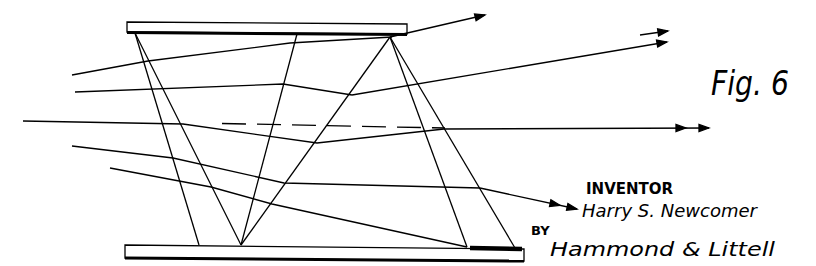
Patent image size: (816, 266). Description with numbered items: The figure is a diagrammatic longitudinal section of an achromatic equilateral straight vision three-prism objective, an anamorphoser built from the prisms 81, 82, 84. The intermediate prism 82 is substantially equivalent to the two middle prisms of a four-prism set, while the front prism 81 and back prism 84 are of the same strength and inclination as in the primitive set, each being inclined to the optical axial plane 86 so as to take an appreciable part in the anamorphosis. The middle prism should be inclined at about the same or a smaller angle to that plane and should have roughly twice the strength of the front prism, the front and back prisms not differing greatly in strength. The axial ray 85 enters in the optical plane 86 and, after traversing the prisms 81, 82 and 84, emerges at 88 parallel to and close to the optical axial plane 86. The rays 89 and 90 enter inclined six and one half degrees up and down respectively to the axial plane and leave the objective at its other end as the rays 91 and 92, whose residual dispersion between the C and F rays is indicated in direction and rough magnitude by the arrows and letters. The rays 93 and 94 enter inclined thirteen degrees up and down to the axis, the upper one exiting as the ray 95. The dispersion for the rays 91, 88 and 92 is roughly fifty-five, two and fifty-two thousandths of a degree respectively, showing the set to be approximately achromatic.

The front prism 81 is at (188, 139).
The intermediate prism 82 is at (315, 139).
The back prism 84 is at (452, 142).
The axial ray 85 is at (52, 121).
The optical axial plane 86 is at (247, 123).
The emergent axial ray 88 is at (591, 128).
The upward inclined ray 89 is at (94, 91).
The downward inclined ray 90 is at (77, 147).
The exiting ray 91 is at (615, 51).
The exiting ray 92 is at (520, 197).
The upward inclined marginal ray 93 is at (92, 71).
The downward inclined marginal ray 94 is at (112, 170).
The exiting marginal ray 95 is at (446, 24).